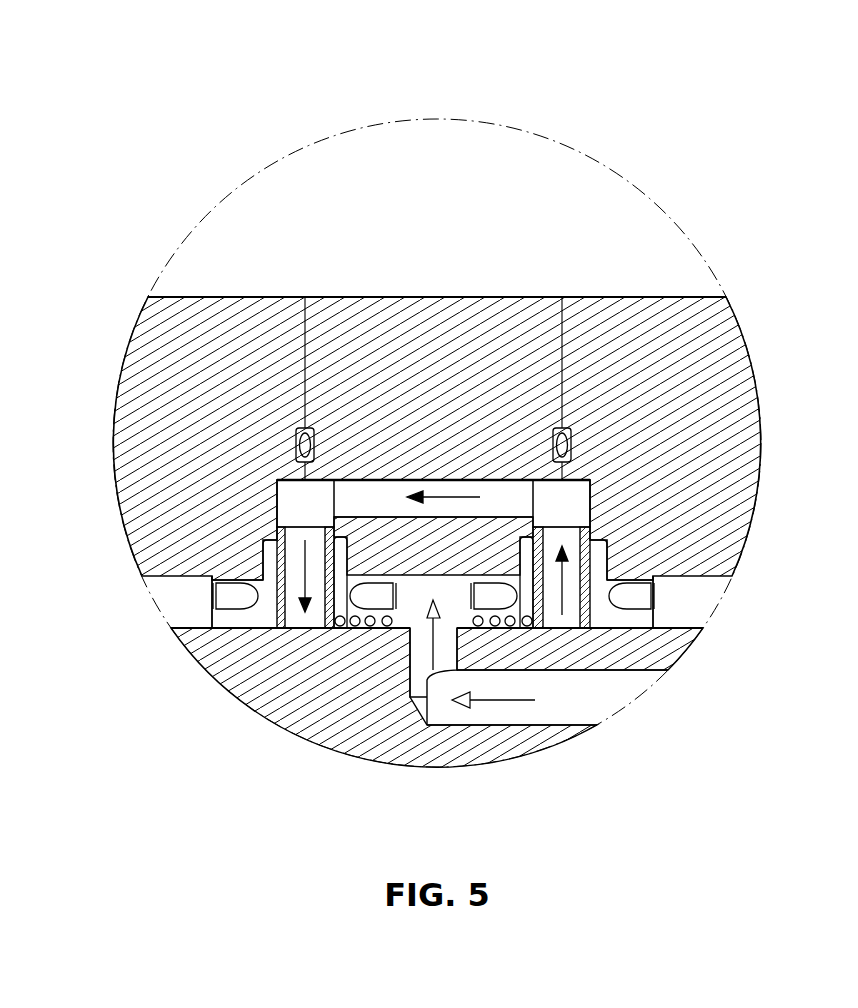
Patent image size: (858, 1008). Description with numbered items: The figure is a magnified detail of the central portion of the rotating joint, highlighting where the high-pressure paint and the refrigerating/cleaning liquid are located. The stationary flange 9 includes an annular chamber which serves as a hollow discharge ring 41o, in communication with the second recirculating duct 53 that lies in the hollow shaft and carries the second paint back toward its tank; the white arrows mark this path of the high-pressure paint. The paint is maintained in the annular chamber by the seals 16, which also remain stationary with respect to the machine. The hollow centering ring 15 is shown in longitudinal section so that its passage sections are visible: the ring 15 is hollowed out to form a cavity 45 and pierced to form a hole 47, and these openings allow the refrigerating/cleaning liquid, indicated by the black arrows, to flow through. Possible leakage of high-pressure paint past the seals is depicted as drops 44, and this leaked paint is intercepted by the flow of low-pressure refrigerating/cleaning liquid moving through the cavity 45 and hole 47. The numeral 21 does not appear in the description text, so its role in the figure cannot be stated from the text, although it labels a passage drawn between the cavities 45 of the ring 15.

The flange 9 is at (655, 373).
The transverse channel 21 is at (452, 490).
The cavity 45 is at (300, 502).
The hollow centering ring 15 is at (332, 525).
The seal 16 is at (290, 608).
The hole 47 is at (300, 610).
The drops 44 is at (387, 627).
The discharge ring 41o is at (418, 603).
The second recirculating duct 53 is at (507, 707).